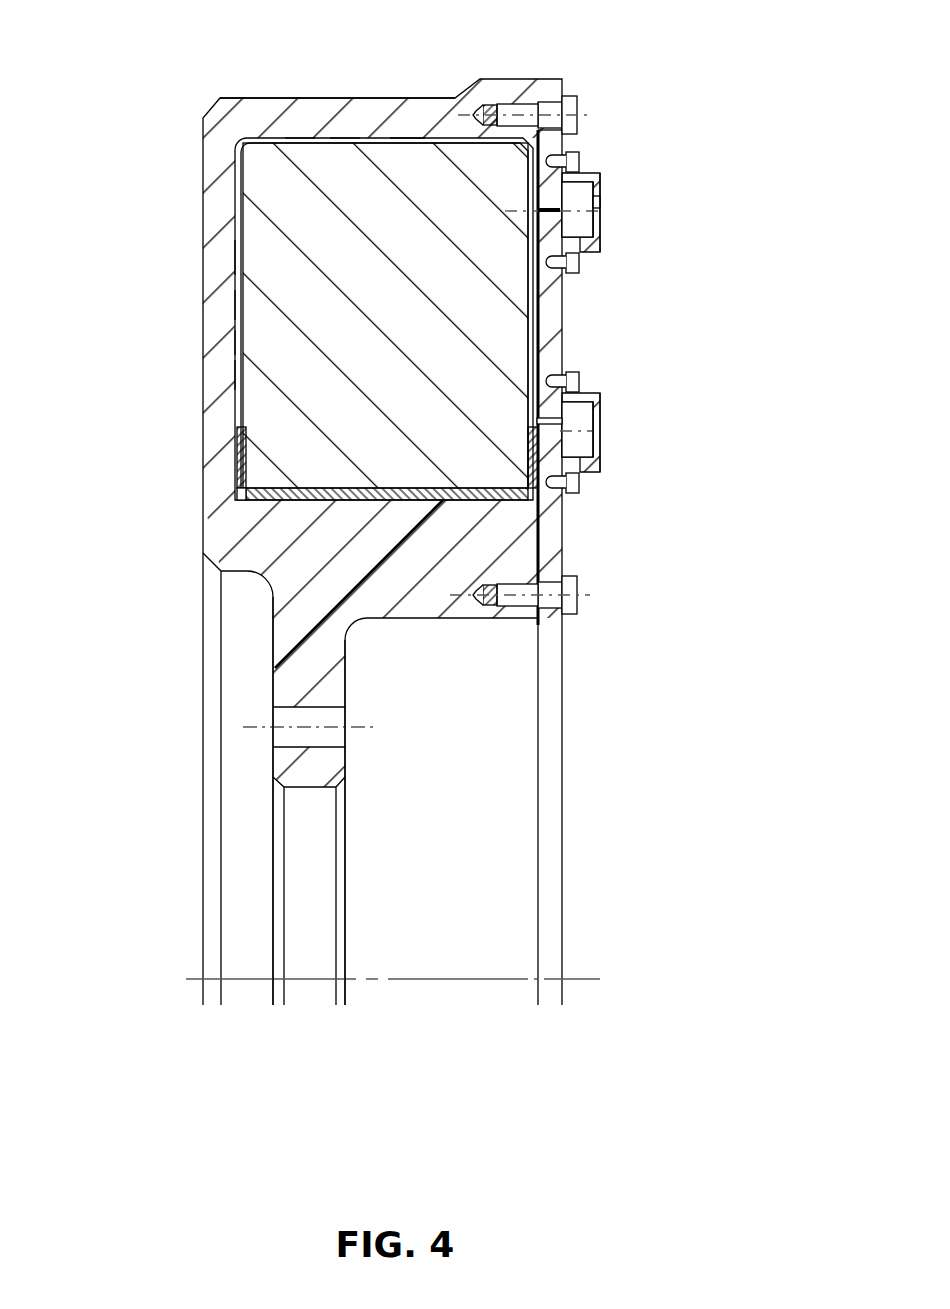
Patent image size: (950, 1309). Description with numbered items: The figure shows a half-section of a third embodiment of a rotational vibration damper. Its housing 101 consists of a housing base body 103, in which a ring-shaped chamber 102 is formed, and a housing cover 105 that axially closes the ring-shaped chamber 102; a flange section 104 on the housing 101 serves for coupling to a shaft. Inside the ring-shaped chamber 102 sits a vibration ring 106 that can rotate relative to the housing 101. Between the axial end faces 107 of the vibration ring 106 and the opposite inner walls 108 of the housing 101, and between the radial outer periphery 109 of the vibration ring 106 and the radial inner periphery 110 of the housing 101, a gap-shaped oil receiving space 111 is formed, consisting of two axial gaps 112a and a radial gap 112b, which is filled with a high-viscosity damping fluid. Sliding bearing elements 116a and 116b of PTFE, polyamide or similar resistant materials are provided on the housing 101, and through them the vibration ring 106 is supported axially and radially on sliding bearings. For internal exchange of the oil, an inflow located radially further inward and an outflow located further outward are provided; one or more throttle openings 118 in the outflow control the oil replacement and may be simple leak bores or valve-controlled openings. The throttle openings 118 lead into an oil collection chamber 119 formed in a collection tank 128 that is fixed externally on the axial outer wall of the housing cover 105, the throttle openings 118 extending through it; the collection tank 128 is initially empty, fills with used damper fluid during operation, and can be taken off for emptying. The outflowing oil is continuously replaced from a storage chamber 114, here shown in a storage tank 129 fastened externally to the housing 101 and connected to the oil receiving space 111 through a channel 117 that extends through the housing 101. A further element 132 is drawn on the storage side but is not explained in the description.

The housing 101 is at (201, 118).
The ring-shaped chamber 102 is at (237, 178).
The housing base body 103 is at (258, 118).
The flange section 104 is at (300, 666).
The housing cover 105 is at (548, 88).
The vibration ring 106 is at (258, 228).
The axial end faces 107 is at (236, 258).
The inner walls 108 is at (236, 306).
The radial outer periphery 109 is at (346, 140).
The radial inner periphery 110 is at (300, 140).
The oil receiving space 111 is at (237, 372).
The axial gaps 112a is at (236, 340).
The radial gap 112b is at (407, 140).
The storage chamber 114 is at (583, 438).
The sliding bearing element 116a is at (238, 463).
The sliding bearing element 116b is at (240, 502).
The channel 117 is at (540, 418).
The throttle openings 118 is at (573, 192).
The oil collection chamber 119 is at (558, 208).
The collection tank 128 is at (600, 223).
The storage tank 129 is at (593, 463).
The terminal 132 is at (597, 201).